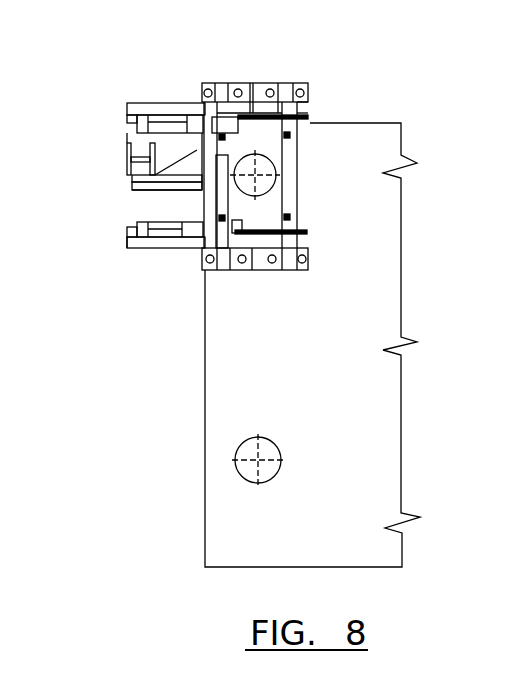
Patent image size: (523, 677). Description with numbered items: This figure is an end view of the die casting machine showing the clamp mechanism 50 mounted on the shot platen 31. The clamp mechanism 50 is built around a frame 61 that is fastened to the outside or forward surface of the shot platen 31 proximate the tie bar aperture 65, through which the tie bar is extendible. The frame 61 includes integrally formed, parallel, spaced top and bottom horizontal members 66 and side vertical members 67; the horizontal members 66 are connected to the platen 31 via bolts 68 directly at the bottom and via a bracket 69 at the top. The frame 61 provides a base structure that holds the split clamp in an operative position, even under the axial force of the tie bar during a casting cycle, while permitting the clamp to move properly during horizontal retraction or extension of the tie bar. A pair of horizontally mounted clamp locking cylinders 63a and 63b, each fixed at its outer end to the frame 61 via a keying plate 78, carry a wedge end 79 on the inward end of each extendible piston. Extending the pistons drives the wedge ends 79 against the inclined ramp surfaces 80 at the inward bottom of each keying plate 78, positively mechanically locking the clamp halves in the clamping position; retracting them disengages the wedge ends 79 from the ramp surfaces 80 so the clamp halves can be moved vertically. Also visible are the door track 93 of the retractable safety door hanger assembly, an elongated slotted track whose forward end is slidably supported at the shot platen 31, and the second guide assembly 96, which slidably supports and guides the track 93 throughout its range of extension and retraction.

The shot platen 31 is at (405, 121).
The clamp mechanism 50 is at (146, 73).
The frame 61 is at (328, 88).
The clamp locking cylinder 63a is at (111, 133).
The clamp locking cylinder 63b is at (125, 252).
The tie bar aperture 65 is at (265, 170).
The horizontal members 66 is at (240, 270).
The side vertical members 67 is at (220, 202).
The bolts 68 is at (280, 82).
The bracket 69 is at (232, 83).
The keying plate 78 is at (176, 100).
The wedge end 79 is at (240, 120).
The inclined ramp surfaces 80 is at (249, 83).
The door track 93 is at (127, 147).
The second guide assembly 96 is at (140, 197).